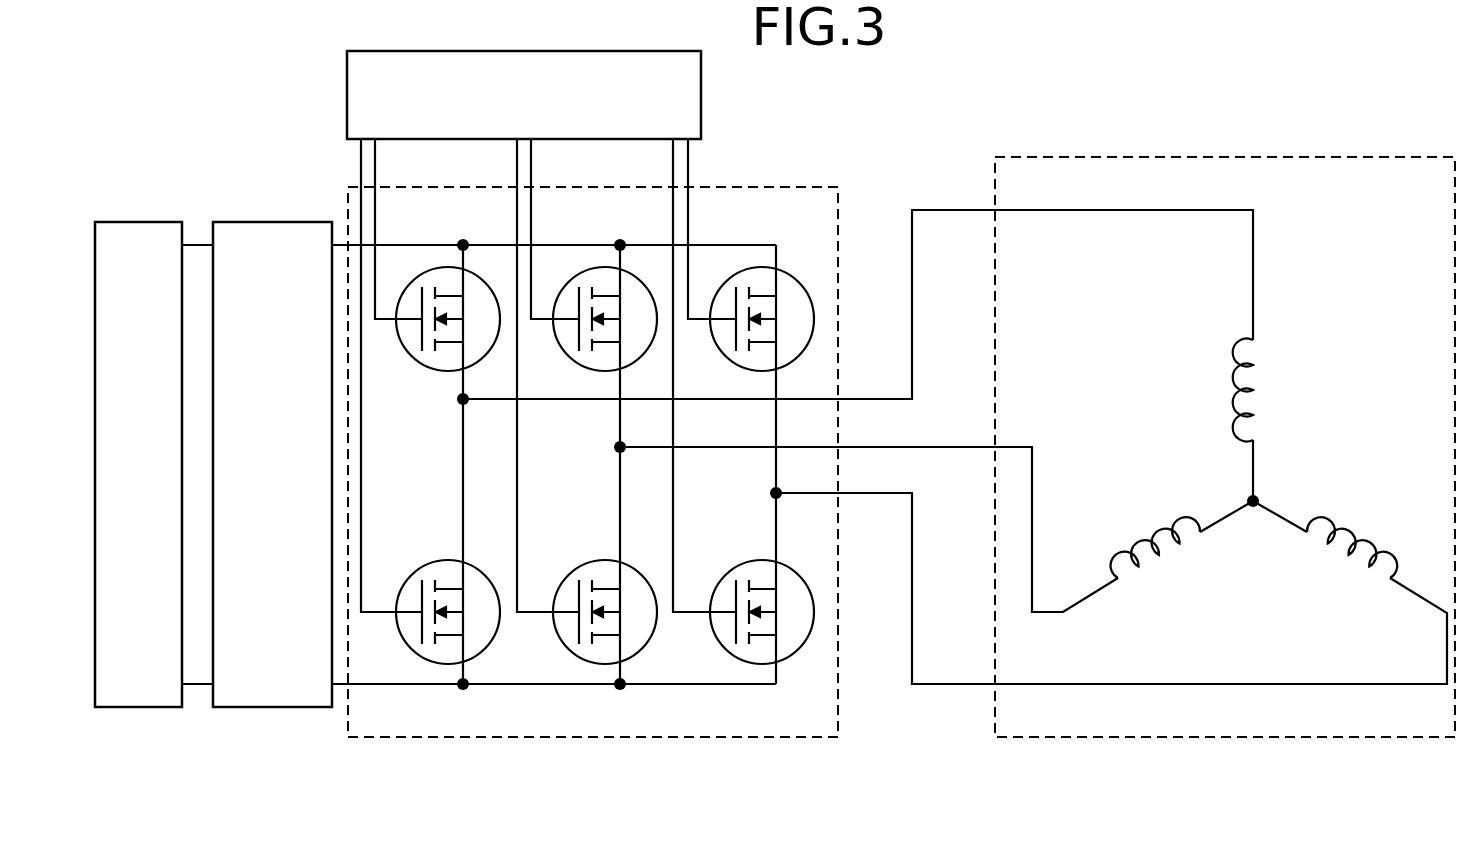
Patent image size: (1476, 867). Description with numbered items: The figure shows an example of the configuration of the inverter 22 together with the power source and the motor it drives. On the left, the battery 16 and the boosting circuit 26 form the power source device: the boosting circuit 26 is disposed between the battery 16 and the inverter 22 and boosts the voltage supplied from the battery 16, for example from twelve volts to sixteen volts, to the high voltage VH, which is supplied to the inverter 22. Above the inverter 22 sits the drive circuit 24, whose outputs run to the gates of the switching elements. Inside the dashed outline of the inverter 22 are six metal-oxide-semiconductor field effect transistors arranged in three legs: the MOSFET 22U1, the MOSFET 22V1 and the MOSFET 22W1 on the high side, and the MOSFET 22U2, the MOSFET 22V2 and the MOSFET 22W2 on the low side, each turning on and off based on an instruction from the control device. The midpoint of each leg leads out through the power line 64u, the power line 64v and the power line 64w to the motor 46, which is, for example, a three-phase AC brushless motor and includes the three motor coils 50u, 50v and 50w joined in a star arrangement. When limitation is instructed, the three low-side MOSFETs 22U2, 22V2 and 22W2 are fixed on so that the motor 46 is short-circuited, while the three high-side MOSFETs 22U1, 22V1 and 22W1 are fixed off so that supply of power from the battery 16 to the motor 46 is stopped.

The battery 16 is at (141, 222).
The boosting circuit 26 is at (272, 222).
The drive circuit 24 is at (540, 51).
The inverter 22 is at (816, 185).
The MOSFET 22U1 is at (425, 370).
The MOSFET 22U2 is at (426, 560).
The MOSFET 22V1 is at (582, 370).
The MOSFET 22V2 is at (583, 560).
The MOSFET 22W1 is at (738, 370).
The MOSFET 22W2 is at (740, 560).
The motor 46 is at (1232, 157).
The motor coil 50u is at (1242, 338).
The motor coil 50v is at (1119, 580).
The motor coil 50w is at (1395, 570).
The power line 64u is at (1085, 212).
The power line 64v is at (1032, 487).
The power line 64w is at (1232, 683).